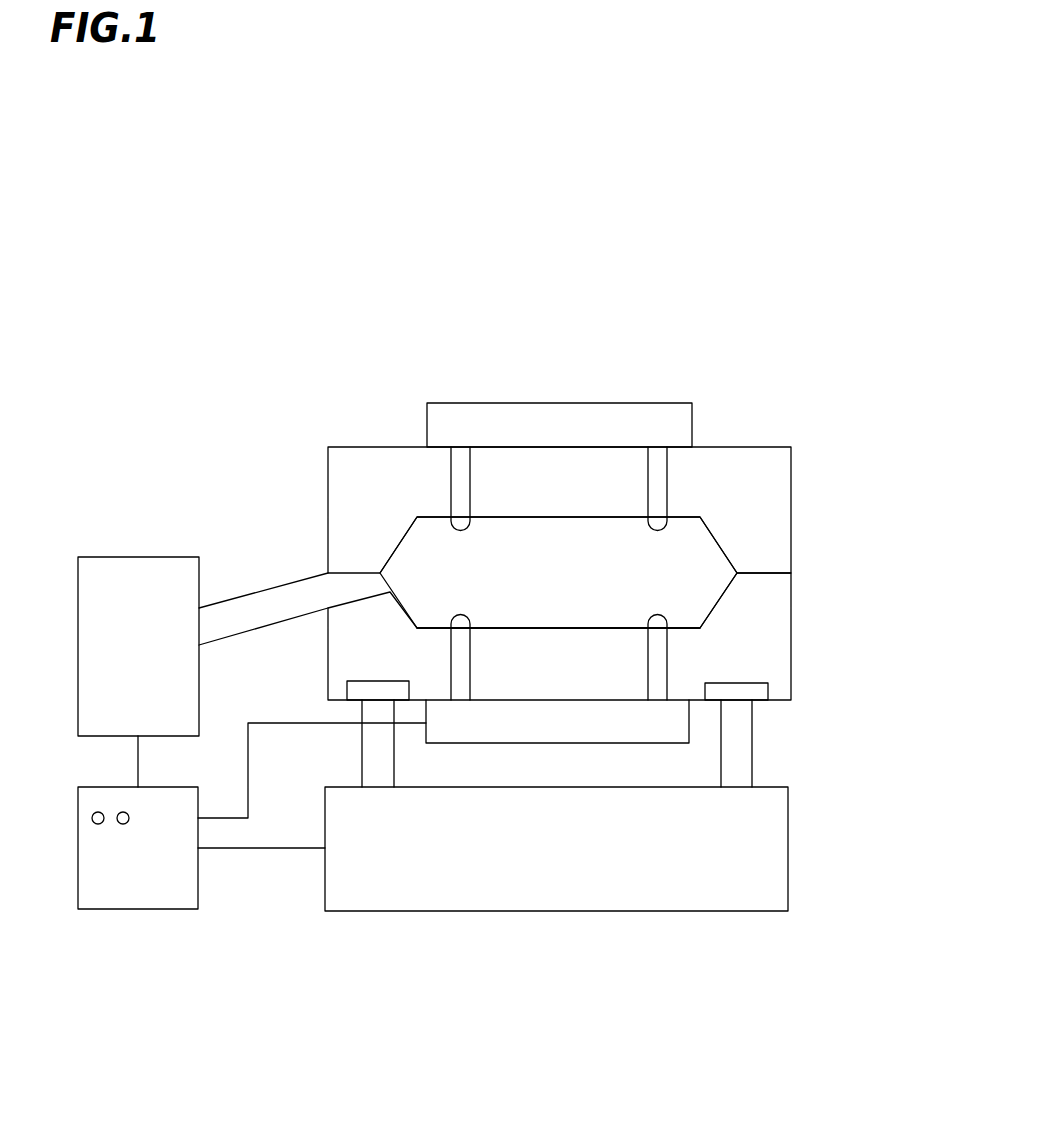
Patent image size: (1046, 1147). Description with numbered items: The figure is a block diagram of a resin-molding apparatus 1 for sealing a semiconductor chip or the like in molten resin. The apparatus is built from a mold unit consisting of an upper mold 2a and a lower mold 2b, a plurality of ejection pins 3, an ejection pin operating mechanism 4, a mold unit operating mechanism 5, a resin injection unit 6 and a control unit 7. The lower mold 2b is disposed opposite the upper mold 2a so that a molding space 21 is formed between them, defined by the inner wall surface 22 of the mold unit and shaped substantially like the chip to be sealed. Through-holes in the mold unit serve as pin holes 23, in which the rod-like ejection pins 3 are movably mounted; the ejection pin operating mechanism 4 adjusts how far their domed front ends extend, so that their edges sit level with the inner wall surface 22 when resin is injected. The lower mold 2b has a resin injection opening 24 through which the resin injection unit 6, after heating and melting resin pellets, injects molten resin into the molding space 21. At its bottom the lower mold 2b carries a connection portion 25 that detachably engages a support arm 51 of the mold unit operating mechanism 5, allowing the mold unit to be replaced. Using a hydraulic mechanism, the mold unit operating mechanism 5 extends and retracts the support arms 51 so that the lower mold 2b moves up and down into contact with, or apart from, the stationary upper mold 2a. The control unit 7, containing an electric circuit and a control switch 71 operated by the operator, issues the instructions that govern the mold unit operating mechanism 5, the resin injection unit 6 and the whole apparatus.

The resin-molding apparatus 1 is at (655, 282).
The upper mold 2a is at (760, 457).
The lower mold 2b is at (770, 603).
The ejection pin 3 is at (463, 473).
The ejection pin operating mechanism 4 is at (465, 727).
The mold unit operating mechanism 5 is at (476, 848).
The resin injection unit 6 is at (127, 565).
The control unit 7 is at (152, 898).
The molding space 21 is at (490, 586).
The inner wall surface 22 is at (528, 617).
The pin hole 23 is at (450, 495).
The resin injection opening 24 is at (297, 593).
The connection portion 25 is at (752, 690).
The support arm 51 is at (743, 748).
The control switch 71 is at (98, 824).